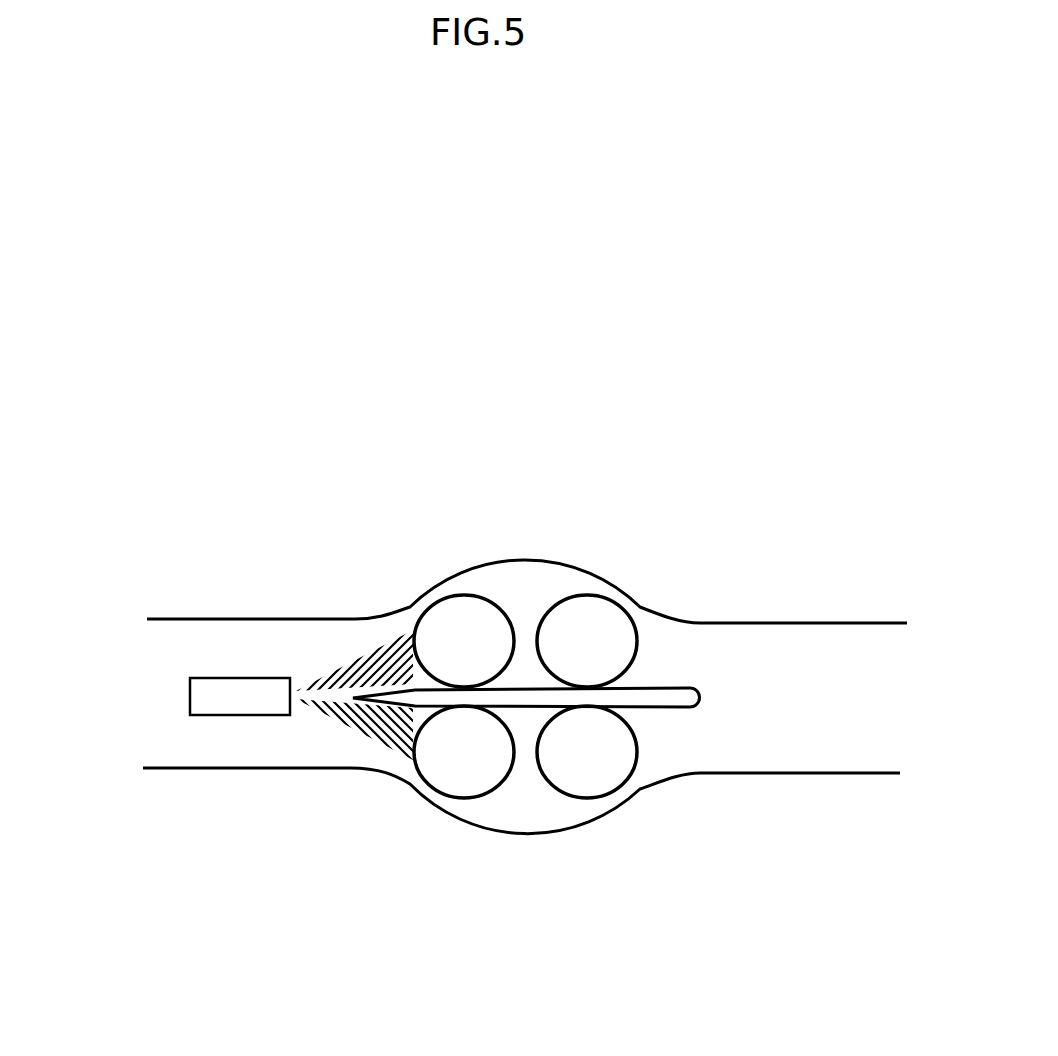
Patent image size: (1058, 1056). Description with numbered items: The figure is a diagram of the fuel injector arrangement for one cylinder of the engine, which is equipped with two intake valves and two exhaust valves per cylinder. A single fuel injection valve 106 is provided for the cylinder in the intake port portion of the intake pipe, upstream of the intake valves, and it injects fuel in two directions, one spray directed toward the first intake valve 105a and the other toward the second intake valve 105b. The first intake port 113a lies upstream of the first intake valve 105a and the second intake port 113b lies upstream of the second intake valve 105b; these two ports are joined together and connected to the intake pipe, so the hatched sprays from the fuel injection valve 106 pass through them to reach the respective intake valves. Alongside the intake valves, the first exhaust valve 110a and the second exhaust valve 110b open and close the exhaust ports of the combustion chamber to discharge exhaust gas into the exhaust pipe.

The fuel injection valve 106 is at (228, 678).
The first intake port 113a is at (375, 622).
The second intake port 113b is at (372, 767).
The first intake valve 105a is at (463, 605).
The first exhaust valve 110a is at (587, 615).
The second intake valve 105b is at (445, 782).
The second exhaust valve 110b is at (588, 783).